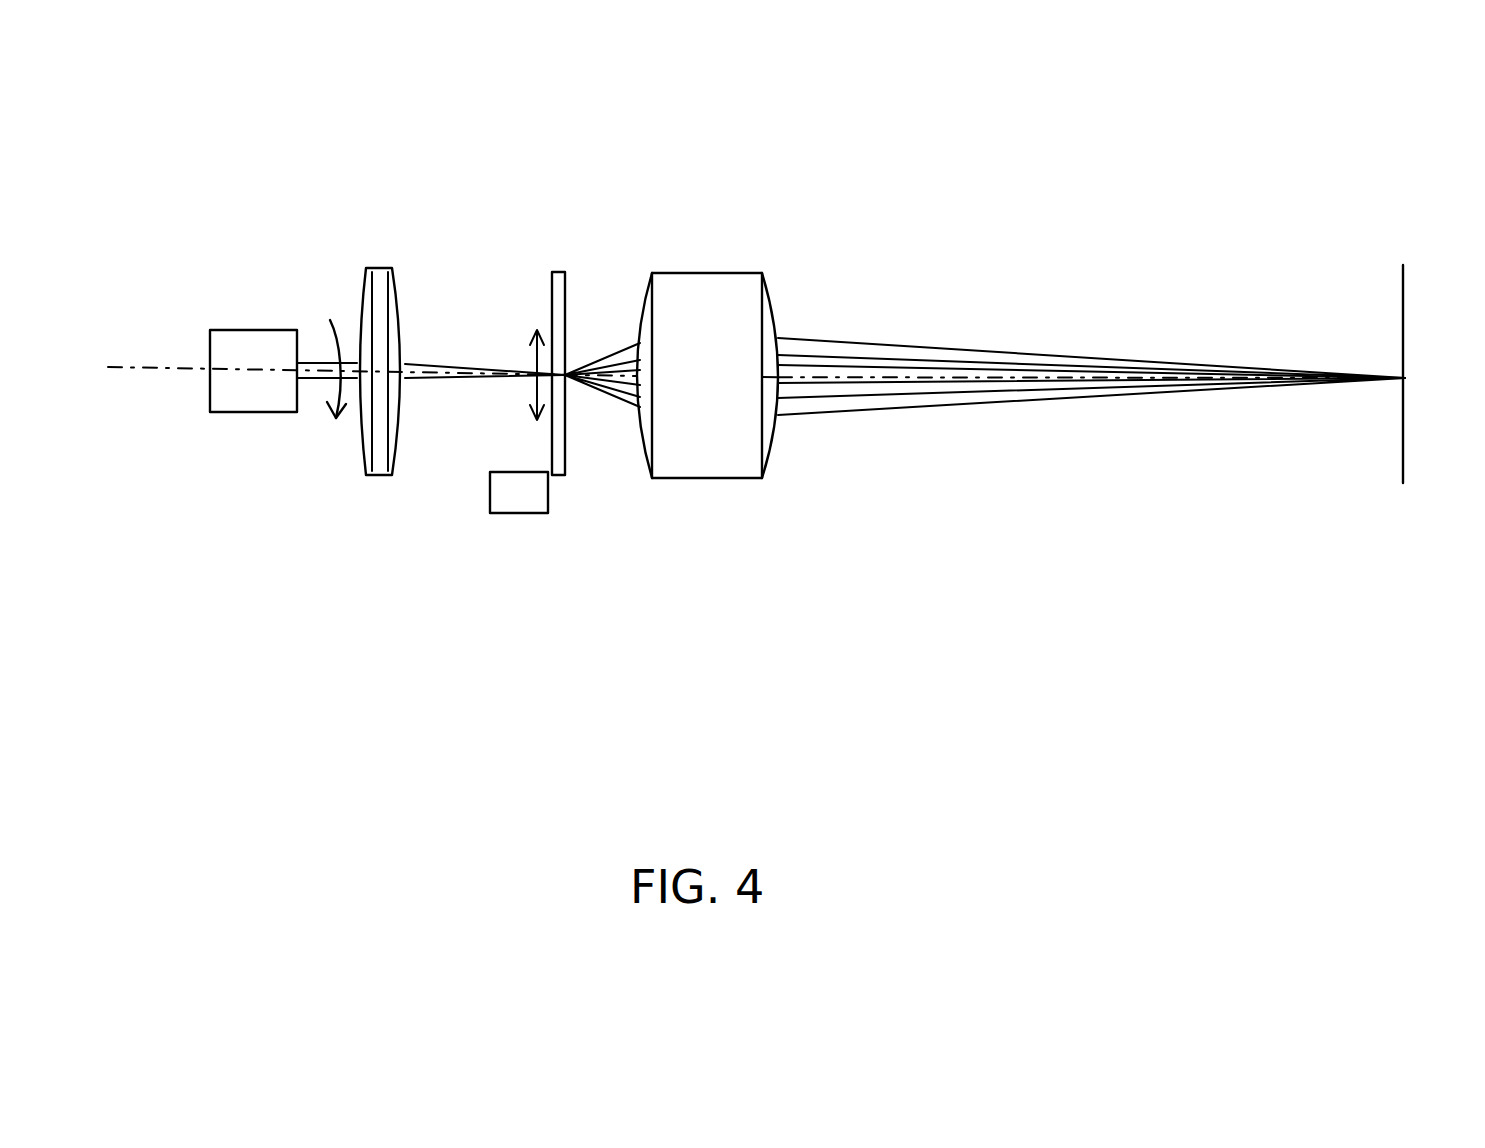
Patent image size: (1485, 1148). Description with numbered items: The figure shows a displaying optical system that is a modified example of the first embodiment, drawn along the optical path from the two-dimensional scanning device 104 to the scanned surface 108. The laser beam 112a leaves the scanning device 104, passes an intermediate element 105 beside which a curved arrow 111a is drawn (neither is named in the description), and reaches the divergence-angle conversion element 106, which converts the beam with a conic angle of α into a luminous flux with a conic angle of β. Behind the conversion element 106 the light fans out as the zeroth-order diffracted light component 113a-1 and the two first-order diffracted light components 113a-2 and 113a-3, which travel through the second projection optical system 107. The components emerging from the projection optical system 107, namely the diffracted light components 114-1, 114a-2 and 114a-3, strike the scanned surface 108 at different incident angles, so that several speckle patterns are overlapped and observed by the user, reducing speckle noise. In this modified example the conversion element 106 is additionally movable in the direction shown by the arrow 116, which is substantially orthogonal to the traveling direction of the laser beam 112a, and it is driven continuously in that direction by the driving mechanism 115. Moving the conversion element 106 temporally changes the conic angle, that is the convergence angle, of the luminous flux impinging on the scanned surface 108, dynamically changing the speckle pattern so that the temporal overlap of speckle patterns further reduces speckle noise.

The two-dimensional scanning device 104 is at (250, 348).
The rotating lens 105 is at (360, 310).
The divergence-angle conversion element 106 is at (557, 298).
The second projection optical system 107 is at (693, 317).
The scanned surface 108 is at (1403, 300).
The rotation direction of lens 111a is at (338, 383).
The laser beam 112a is at (492, 383).
The zeroth-order diffracted light component 113a-1 is at (643, 393).
The first-order diffracted light component 113a-2 is at (630, 387).
The first-order diffracted light component 113a-3 is at (625, 380).
The diffracted light component 114-1 is at (1032, 377).
The diffracted light component 114a-2 is at (1078, 397).
The diffracted light component 114a-3 is at (986, 353).
The driving mechanism 115 is at (518, 500).
The arrow 116 is at (523, 340).